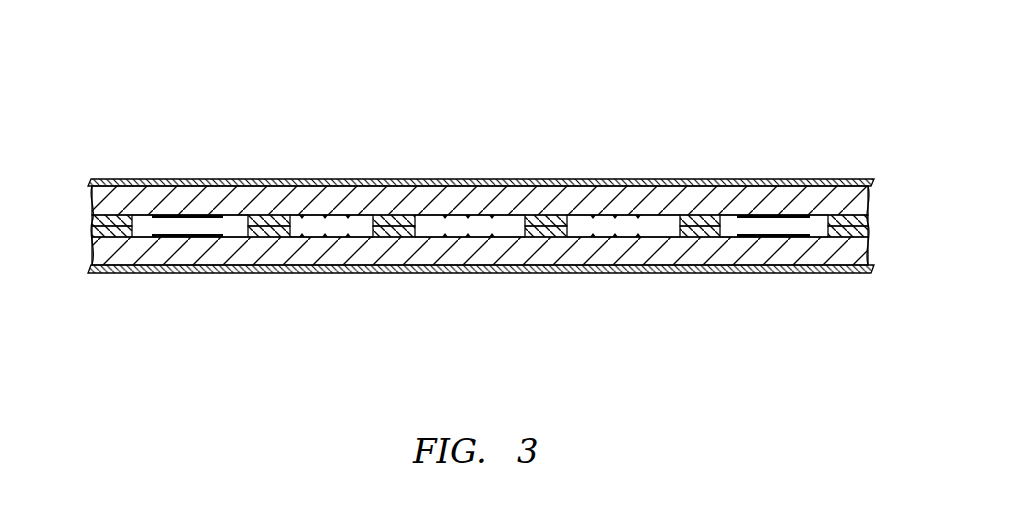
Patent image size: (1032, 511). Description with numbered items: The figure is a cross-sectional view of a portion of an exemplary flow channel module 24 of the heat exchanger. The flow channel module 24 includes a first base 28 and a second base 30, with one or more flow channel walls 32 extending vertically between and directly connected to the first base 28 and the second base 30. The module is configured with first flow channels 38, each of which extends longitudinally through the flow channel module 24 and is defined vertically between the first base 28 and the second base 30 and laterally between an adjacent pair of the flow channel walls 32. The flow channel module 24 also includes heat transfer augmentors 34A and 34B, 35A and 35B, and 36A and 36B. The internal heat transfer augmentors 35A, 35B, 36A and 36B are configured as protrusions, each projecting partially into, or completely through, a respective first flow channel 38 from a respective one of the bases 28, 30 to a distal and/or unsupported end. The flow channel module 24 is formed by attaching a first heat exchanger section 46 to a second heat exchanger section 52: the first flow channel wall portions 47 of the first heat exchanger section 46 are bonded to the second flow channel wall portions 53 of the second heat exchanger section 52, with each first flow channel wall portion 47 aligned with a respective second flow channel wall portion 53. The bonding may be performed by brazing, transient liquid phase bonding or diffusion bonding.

The flow channel module 24 is at (738, 97).
The first base 28 is at (93, 200).
The second base 30 is at (93, 248).
The flow channel wall 32 is at (122, 214).
The heat transfer augmentor 34A is at (475, 178).
The heat transfer augmentor 34B is at (473, 273).
The heat transfer augmentor 35A is at (340, 215).
The heat transfer augmentor 35B is at (303, 237).
The heat transfer augmentor 36A is at (195, 215).
The heat transfer augmentor 36B is at (197, 237).
The first flow channel 38 is at (142, 234).
The first heat exchanger section 46 is at (846, 170).
The first flow channel wall portion 47 is at (552, 215).
The second heat exchanger section 52 is at (857, 284).
The second flow channel wall portion 53 is at (406, 237).